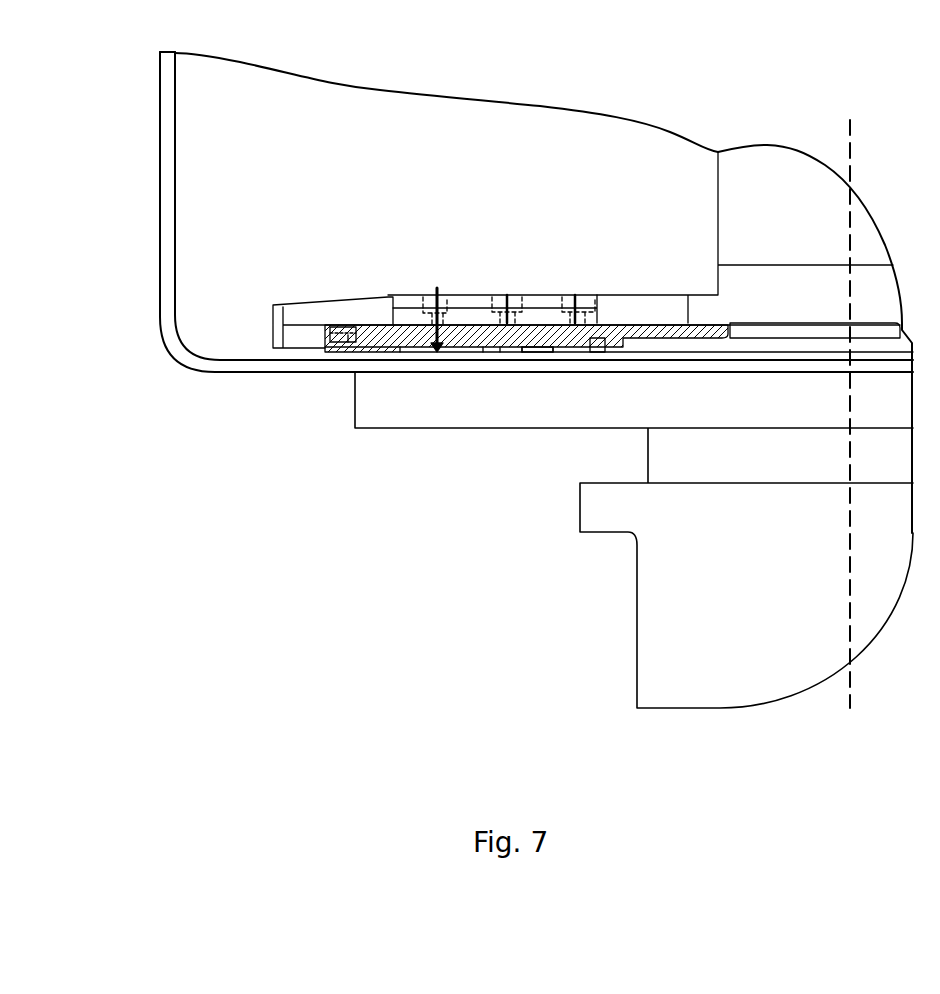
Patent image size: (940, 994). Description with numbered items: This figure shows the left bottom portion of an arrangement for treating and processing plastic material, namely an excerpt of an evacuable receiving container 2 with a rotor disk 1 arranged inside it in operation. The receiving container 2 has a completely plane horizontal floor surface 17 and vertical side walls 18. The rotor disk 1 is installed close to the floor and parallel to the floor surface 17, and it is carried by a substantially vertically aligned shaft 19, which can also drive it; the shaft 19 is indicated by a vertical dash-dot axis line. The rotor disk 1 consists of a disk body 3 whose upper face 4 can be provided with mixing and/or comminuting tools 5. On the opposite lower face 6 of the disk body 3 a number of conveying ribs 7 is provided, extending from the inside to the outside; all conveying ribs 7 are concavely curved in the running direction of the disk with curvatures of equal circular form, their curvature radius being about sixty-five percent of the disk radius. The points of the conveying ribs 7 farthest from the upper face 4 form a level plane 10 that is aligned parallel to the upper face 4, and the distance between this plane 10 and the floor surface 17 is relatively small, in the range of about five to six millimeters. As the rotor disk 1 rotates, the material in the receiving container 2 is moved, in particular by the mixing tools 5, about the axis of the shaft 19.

The rotor disk 1 is at (299, 286).
The receiving container 2 is at (200, 147).
The disk body 3 is at (467, 325).
The upper face 4 is at (357, 322).
The mixing and/or comminuting tools 5 is at (347, 307).
The lower face 6 is at (540, 350).
The conveying ribs 7 is at (380, 353).
The level plane 10 is at (587, 353).
The floor surface 17 is at (425, 362).
The side walls 18 is at (167, 240).
The shaft 19 is at (848, 548).